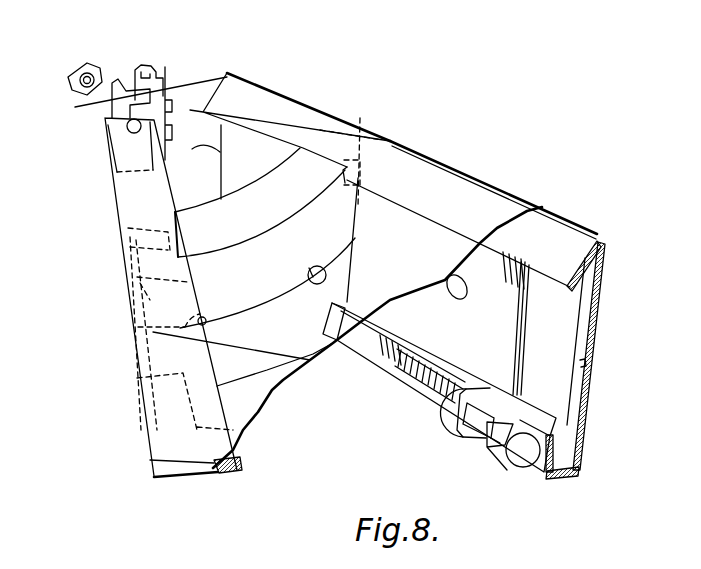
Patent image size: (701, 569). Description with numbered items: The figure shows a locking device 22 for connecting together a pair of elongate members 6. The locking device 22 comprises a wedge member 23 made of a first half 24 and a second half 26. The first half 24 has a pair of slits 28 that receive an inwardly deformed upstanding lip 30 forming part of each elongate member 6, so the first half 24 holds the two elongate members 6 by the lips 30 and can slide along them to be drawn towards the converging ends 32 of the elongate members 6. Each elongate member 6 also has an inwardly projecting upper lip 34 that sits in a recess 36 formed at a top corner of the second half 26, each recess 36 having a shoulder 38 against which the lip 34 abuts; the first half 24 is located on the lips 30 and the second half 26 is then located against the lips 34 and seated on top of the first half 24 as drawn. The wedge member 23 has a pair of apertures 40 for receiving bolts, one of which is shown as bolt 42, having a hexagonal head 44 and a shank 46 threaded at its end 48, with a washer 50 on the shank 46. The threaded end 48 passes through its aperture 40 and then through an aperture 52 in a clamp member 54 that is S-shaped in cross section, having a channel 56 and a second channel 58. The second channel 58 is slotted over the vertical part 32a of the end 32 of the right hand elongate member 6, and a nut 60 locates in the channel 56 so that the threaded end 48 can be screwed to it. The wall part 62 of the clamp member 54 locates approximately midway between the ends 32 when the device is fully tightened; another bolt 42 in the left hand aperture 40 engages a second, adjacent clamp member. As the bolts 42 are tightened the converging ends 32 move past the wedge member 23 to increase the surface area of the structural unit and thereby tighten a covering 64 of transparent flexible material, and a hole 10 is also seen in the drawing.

The elongate member 6 is at (233, 472).
The hole 10 is at (450, 295).
The locking device 22 is at (349, 156).
The wedge member 23 is at (312, 162).
The first half 24 is at (243, 373).
The second half 26 is at (198, 324).
The slits 28 is at (137, 378).
The upstanding lip 30 is at (245, 437).
The converging ends 32 is at (127, 147).
The vertical part 32a is at (198, 162).
The upper lip 34 is at (128, 186).
The recesses 36 is at (130, 238).
The shoulder 38 is at (148, 280).
The apertures 40 is at (203, 318).
The bolt 42 is at (474, 444).
The hexagonal head 44 is at (518, 462).
The shank 46 is at (473, 417).
The threaded end 48 is at (436, 372).
The washer 50 is at (482, 398).
The aperture 52 is at (130, 132).
The clamp member 54 is at (166, 56).
The channel 56 is at (126, 80).
The second channel 58 is at (165, 82).
The nut 60 is at (83, 63).
The wall part 62 is at (139, 97).
The covering 64 is at (462, 250).